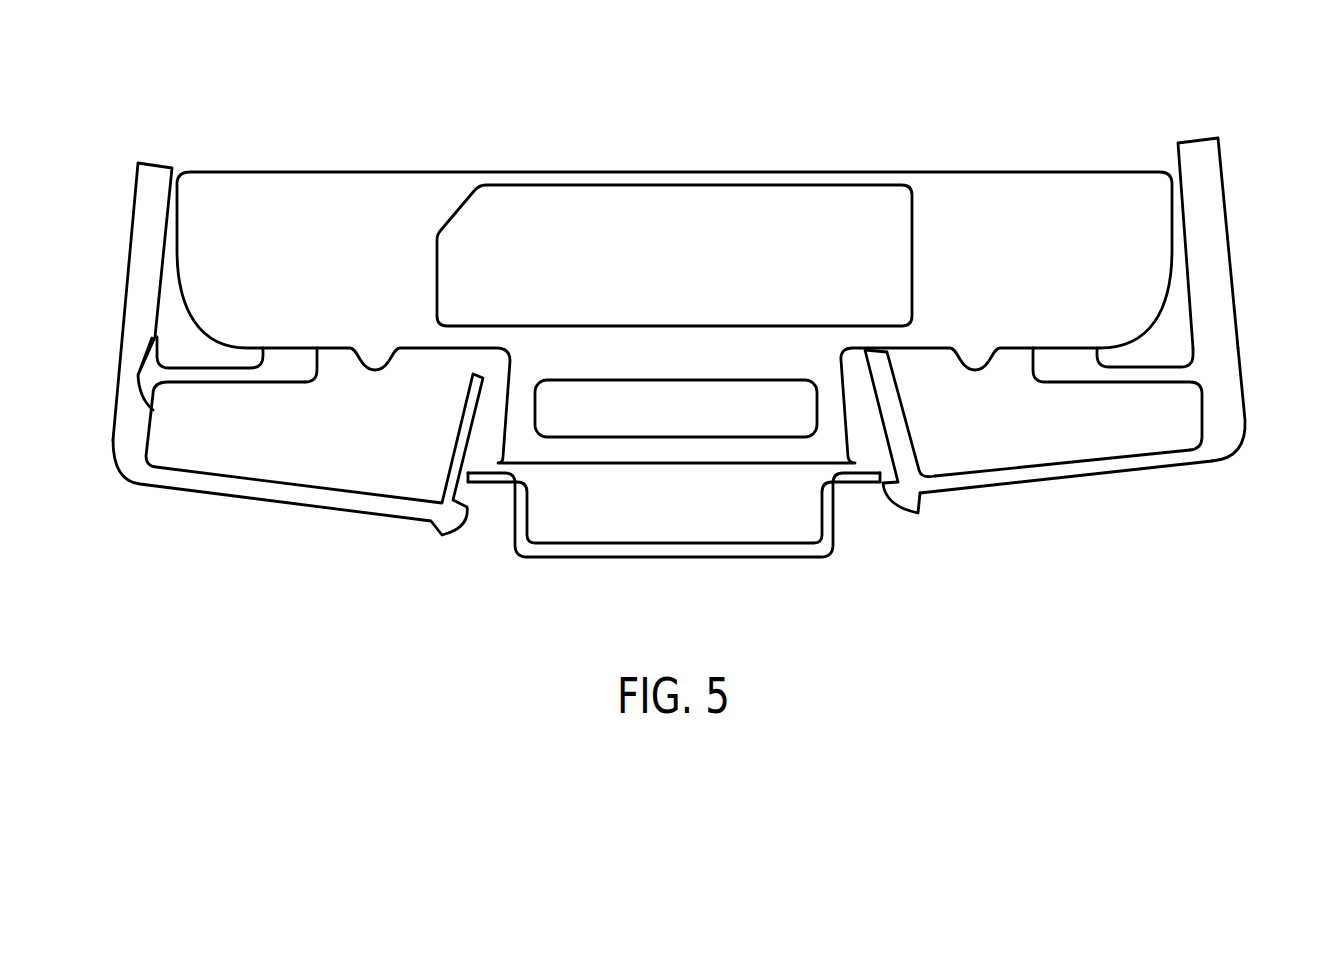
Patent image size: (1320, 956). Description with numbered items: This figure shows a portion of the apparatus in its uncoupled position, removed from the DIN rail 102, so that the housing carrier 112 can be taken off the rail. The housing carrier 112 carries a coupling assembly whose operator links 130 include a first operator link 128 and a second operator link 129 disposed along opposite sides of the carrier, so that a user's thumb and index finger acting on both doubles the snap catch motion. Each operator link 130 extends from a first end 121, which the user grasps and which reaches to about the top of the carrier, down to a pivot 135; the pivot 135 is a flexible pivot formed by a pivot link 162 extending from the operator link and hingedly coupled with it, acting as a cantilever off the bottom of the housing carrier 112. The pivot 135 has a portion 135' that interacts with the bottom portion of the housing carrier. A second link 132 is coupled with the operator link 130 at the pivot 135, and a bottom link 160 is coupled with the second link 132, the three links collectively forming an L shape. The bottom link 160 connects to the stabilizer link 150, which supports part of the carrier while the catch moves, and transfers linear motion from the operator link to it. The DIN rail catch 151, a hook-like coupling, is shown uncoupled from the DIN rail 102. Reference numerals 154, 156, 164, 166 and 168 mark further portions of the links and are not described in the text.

The DIN rail 102 is at (778, 557).
The housing carrier 112 is at (995, 181).
The first end 121 is at (1212, 165).
The first operator link 128 is at (156, 163).
The second operator link 129 is at (1197, 138).
The operator link 130 is at (132, 266).
The second link 132 is at (1235, 408).
The pivot 135 is at (726, 390).
The portion of the pivot 135' is at (316, 392).
The stabilizer link 150 is at (898, 413).
The DIN rail catch 151 is at (883, 490).
The strut portion 154 is at (907, 450).
The strut base 156 is at (927, 470).
The bottom link 160 is at (1152, 462).
The pivot link 162 is at (1110, 465).
The bottom wall inner layer 164 is at (1068, 470).
The flap layer 166 is at (1213, 197).
The flap layer 168 is at (1215, 227).